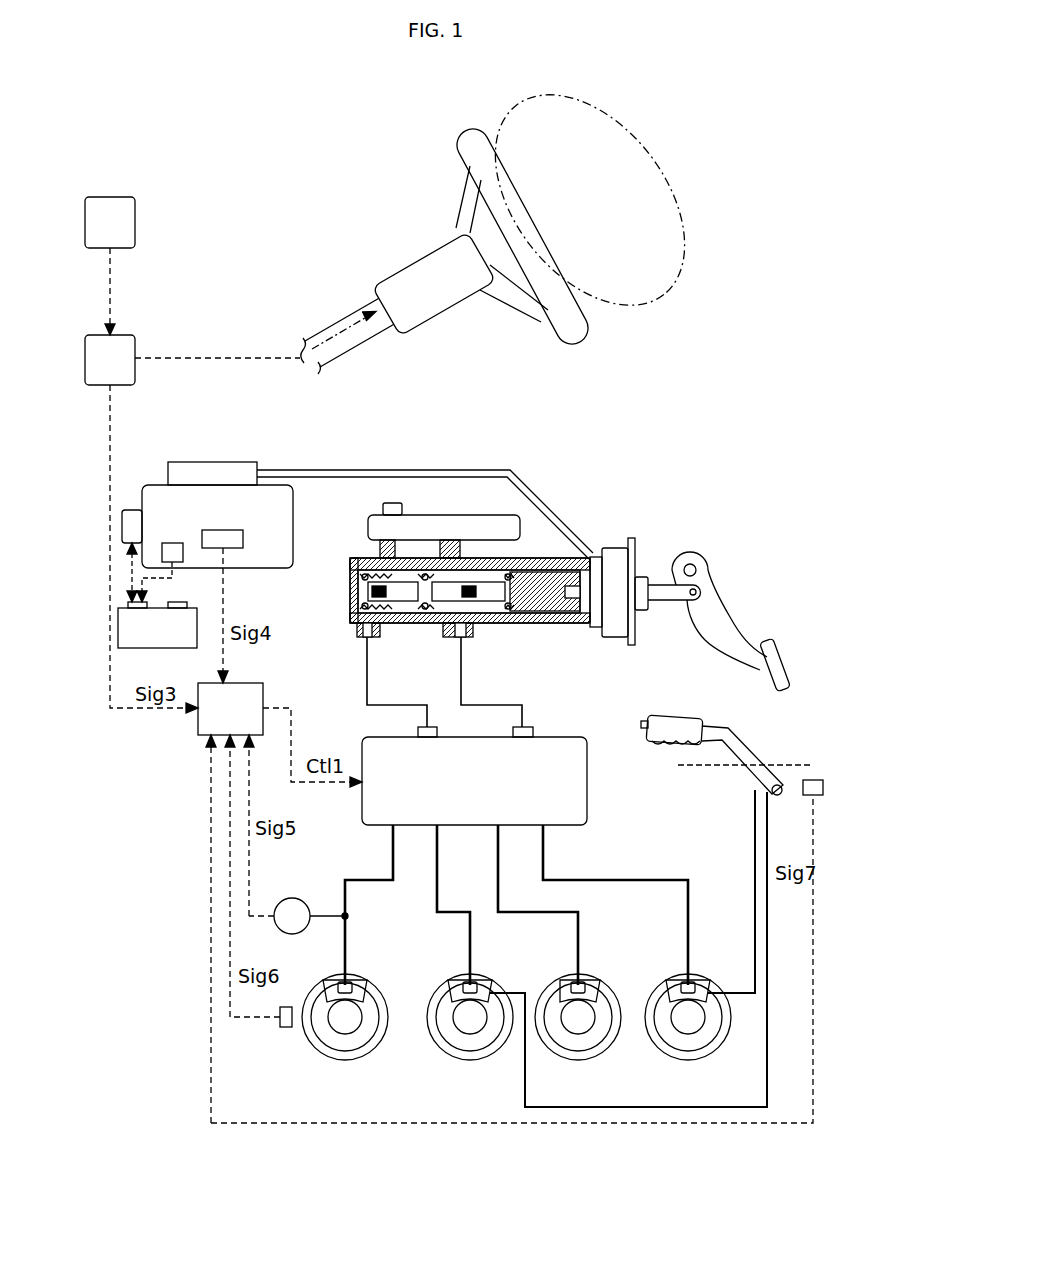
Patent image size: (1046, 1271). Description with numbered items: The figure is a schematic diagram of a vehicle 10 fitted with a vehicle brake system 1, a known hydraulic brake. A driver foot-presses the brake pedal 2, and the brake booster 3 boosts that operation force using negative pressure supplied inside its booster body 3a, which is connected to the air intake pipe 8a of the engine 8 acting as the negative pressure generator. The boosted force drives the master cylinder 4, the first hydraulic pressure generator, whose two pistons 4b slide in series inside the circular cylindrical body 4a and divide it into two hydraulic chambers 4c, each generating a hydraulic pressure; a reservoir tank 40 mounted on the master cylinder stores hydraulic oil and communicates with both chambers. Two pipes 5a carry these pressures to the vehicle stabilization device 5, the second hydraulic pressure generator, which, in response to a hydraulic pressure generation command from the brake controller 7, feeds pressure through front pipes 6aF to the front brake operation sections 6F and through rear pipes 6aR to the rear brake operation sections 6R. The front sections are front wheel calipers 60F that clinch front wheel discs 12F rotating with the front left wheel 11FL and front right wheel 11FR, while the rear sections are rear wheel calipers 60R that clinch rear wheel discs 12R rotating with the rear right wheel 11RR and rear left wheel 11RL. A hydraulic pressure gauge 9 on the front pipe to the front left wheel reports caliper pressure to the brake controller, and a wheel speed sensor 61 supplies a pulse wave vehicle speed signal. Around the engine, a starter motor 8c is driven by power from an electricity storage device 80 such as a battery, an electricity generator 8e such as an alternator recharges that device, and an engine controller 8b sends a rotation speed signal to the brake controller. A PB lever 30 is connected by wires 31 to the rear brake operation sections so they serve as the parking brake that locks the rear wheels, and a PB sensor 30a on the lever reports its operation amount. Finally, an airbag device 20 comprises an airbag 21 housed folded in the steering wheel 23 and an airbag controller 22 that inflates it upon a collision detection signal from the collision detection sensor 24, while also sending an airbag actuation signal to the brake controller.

The vehicle brake system 1 is at (578, 465).
The brake pedal 2 is at (720, 598).
The brake booster 3 is at (645, 614).
The booster body 3a is at (618, 646).
The master cylinder 4 is at (445, 578).
The body 4a is at (540, 624).
The pistons 4b is at (396, 612).
The hydraulic chambers 4c is at (350, 587).
The vehicle stabilization device 5 is at (587, 782).
The pipes 5a is at (367, 693).
The front brake operation sections 6F is at (356, 982).
The rear brake operation sections 6R is at (481, 982).
The front pipes 6aF is at (347, 898).
The rear pipes 6aR is at (472, 933).
The brake controller 7 is at (263, 688).
The engine 8 is at (357, 520).
The air intake pipe 8a is at (225, 462).
The engine controller 8b is at (243, 539).
The starter motor 8c is at (132, 509).
The electricity generator 8e is at (183, 555).
The hydraulic pressure gauge 9 is at (290, 935).
The vehicle 10 is at (708, 84).
The front left wheel 11FL is at (383, 1040).
The rear right wheel 11RR is at (511, 1040).
The front right wheel 11FR is at (616, 1040).
The rear left wheel 11RL is at (726, 1040).
The front wheel discs 12F is at (345, 1052).
The rear wheel discs 12R is at (462, 1052).
The airbag device 20 is at (290, 214).
The airbag 21 is at (673, 232).
The airbag controller 22 is at (135, 338).
The steering wheel 23 is at (455, 318).
The collision detection sensor 24 is at (135, 224).
The PB lever 30 is at (680, 722).
The PB sensor 30a is at (814, 779).
The wires 31 is at (766, 846).
The reservoir tank 40 is at (445, 512).
The front wheel calipers 60F is at (326, 984).
The rear wheel calipers 60R is at (452, 984).
The wheel speed sensor 61 is at (286, 1028).
The electricity storage device 80 is at (150, 648).